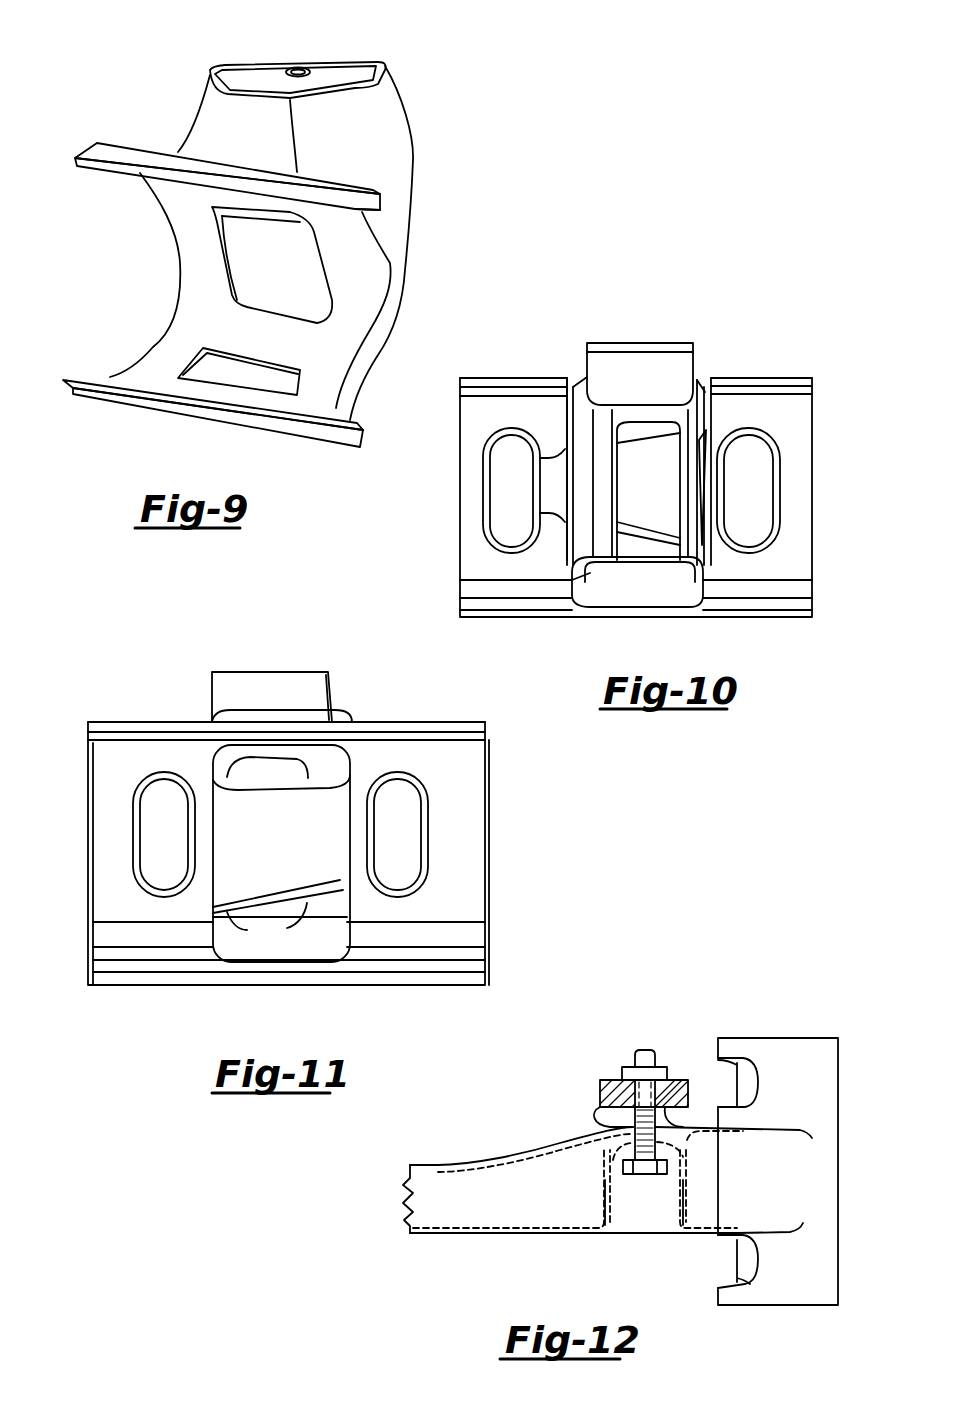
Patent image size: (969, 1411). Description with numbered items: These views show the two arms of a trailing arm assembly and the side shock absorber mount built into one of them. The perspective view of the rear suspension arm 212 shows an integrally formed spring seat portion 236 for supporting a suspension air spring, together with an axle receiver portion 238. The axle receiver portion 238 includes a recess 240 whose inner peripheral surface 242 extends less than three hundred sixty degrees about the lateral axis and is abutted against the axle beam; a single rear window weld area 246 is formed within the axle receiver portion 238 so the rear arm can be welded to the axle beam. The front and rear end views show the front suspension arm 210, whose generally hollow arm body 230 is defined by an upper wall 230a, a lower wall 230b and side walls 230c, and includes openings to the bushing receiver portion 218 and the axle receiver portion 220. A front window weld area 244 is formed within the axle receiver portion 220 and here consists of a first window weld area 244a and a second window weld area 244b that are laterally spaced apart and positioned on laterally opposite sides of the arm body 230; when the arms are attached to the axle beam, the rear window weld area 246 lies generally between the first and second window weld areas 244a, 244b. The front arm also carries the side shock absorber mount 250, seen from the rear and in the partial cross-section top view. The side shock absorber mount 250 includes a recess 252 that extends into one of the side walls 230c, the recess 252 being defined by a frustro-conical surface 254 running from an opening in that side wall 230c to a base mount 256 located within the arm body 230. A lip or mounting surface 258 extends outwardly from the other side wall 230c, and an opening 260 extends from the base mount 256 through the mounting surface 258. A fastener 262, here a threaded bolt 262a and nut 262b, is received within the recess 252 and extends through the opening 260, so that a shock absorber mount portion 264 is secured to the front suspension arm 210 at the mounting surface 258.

In FIG. 10, the front suspension arm 210 is at (779, 372).
In FIG. 11, the front suspension arm 210 is at (503, 971).
In FIG. 12, the front suspension arm 210 is at (433, 1160).
In FIG. 9, the rear suspension arm 212 is at (52, 161).
In FIG. 11, the bushing receiver portion 218 is at (335, 692).
In FIG. 11, the axle receiver portion 220 is at (436, 720).
In FIG. 12, the axle receiver portion 220 is at (823, 1037).
In FIG. 12, the arm body 230 is at (538, 1160).
In FIG. 10, the upper wall 230a is at (640, 374).
In FIG. 11, the upper wall 230a is at (222, 690).
In FIG. 12, the upper wall 230a is at (458, 1160).
In FIG. 10, the lower wall 230b is at (637, 618).
In FIG. 12, the lower wall 230b is at (525, 1234).
In FIG. 10, the side walls 230c is at (572, 558).
In FIG. 9, the spring seat portion 236 is at (248, 76).
In FIG. 9, the axle receiver portion 238 is at (362, 428).
In FIG. 9, the recess 240 is at (117, 298).
In FIG. 9, the inner peripheral surface 242 is at (194, 278).
In FIG. 10, the front window weld area 244 is at (505, 457).
In FIG. 10, the first window weld area 244a is at (482, 496).
In FIG. 11, the first window weld area 244a is at (425, 817).
In FIG. 12, the first window weld area 244a is at (758, 1263).
In FIG. 10, the second window weld area 244b is at (785, 497).
In FIG. 11, the second window weld area 244b is at (140, 814).
In FIG. 12, the second window weld area 244b is at (758, 1088).
In FIG. 9, the rear window weld area 246 is at (332, 308).
In FIG. 11, the side shock absorber mount 250 is at (281, 843).
In FIG. 12, the recess 252 is at (647, 1208).
In FIG. 12, the frustro-conical surface 254 is at (667, 1203).
In FIG. 12, the base mount 256 is at (703, 1143).
In FIG. 10, the mounting surface 258 is at (547, 480).
In FIG. 12, the mounting surface 258 is at (603, 1123).
In FIG. 12, the opening 260 is at (606, 1163).
In FIG. 12, the fastener 262 is at (647, 1050).
In FIG. 12, the threaded bolt 262a is at (623, 1177).
In FIG. 12, the nut 262b is at (660, 1060).
In FIG. 12, the shock absorber mount portion 264 is at (675, 1088).